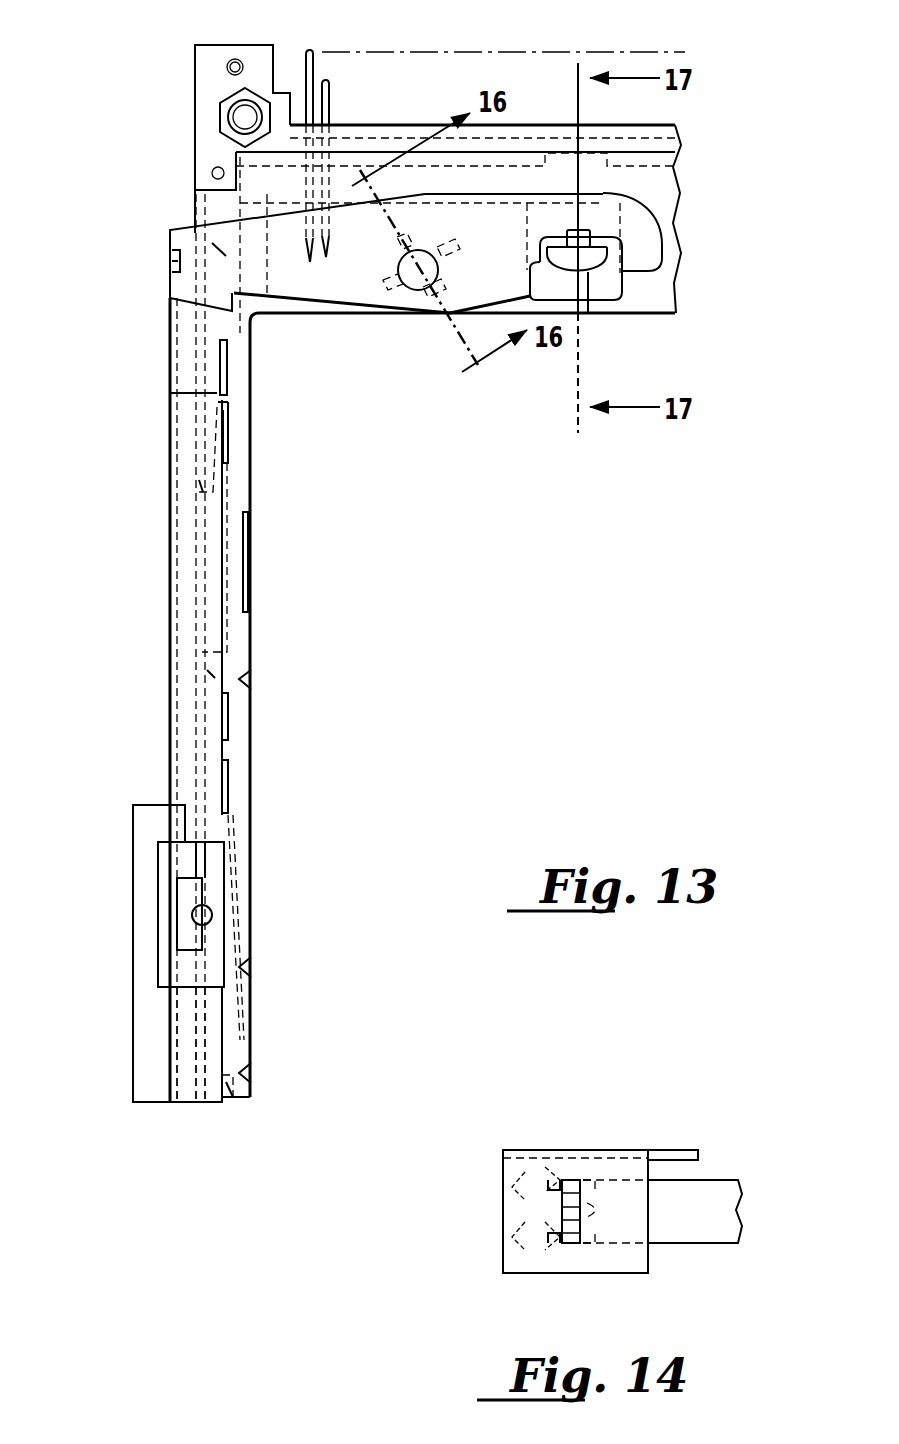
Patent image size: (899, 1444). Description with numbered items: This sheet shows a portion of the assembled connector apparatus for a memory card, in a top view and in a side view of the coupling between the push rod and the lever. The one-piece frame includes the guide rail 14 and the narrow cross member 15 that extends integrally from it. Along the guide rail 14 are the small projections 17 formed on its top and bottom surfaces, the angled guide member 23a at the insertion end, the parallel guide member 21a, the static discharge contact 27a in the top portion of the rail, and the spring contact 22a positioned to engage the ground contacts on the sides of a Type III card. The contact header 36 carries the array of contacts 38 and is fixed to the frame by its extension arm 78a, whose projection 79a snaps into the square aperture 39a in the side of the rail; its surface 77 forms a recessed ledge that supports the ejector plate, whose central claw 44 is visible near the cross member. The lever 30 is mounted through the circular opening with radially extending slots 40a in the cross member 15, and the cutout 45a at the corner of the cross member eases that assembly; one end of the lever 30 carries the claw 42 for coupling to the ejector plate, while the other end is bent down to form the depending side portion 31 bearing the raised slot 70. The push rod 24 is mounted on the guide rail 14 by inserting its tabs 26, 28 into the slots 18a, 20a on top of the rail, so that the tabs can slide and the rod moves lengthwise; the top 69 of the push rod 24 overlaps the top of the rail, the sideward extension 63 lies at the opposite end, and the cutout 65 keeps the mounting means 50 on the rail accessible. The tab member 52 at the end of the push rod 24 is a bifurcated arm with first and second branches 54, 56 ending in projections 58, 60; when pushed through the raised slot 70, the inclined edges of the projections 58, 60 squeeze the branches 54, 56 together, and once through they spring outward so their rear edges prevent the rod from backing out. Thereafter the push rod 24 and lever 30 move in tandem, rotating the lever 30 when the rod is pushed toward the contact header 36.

In FIG. 13, the guide rail 14 is at (252, 1040).
In FIG. 13, the cross member 15 is at (667, 285).
In FIG. 13, the projections 17 is at (247, 680).
In FIG. 13, the slot 18a is at (228, 438).
In FIG. 13, the slot 20a is at (228, 725).
In FIG. 13, the guide member 21a is at (225, 508).
In FIG. 13, the spring contact 22a is at (235, 945).
In FIG. 13, the guide member 23a is at (235, 1100).
In FIG. 13, the push rod 24 is at (170, 715).
In FIG. 13, the tab 26 is at (228, 402).
In FIG. 13, the static discharge contact 27a is at (248, 557).
In FIG. 13, the tab 28 is at (225, 752).
In FIG. 13, the lever 30 is at (640, 232).
In FIG. 14, the lever 30 is at (675, 1150).
In FIG. 13, the depending side portion 31 is at (170, 245).
In FIG. 14, the depending side portion 31 is at (503, 1255).
In FIG. 13, the contact header 36 is at (188, 91).
In FIG. 13, the contacts 38 is at (309, 52).
In FIG. 13, the aperture 39a is at (203, 490).
In FIG. 13, the circular opening with radially extending slots 40a is at (410, 290).
In FIG. 13, the claw 42 is at (600, 258).
In FIG. 13, the claw 44 is at (592, 256).
In FIG. 13, the cutout 45a is at (212, 182).
In FIG. 13, the mounting means 50 is at (192, 920).
In FIG. 13, the tab member 52 is at (170, 340).
In FIG. 14, the tab member 52 is at (703, 1225).
In FIG. 14, the first branch 54 is at (555, 1185).
In FIG. 14, the second branch 56 is at (553, 1245).
In FIG. 14, the projection 58 is at (530, 1178).
In FIG. 14, the projection 60 is at (535, 1240).
In FIG. 13, the sideward extension 63 is at (133, 1005).
In FIG. 13, the cutout 65 is at (182, 860).
In FIG. 13, the top 69 is at (213, 675).
In FIG. 13, the raised slot 70 is at (170, 266).
In FIG. 14, the raised slot 70 is at (575, 1245).
In FIG. 13, the surface 77 is at (212, 243).
In FIG. 13, the extension arm 78a is at (210, 415).
In FIG. 13, the projection 79a is at (199, 480).